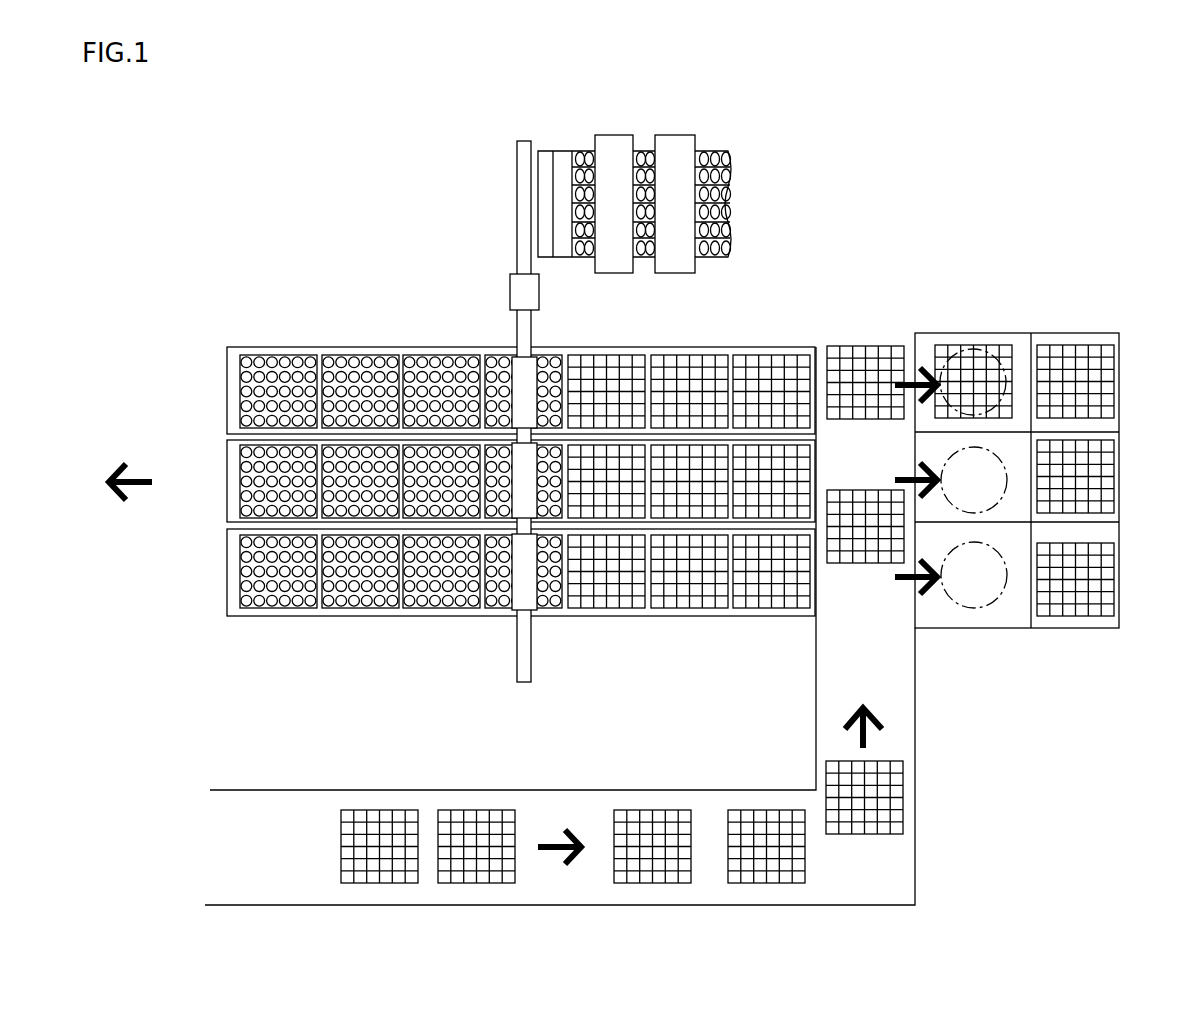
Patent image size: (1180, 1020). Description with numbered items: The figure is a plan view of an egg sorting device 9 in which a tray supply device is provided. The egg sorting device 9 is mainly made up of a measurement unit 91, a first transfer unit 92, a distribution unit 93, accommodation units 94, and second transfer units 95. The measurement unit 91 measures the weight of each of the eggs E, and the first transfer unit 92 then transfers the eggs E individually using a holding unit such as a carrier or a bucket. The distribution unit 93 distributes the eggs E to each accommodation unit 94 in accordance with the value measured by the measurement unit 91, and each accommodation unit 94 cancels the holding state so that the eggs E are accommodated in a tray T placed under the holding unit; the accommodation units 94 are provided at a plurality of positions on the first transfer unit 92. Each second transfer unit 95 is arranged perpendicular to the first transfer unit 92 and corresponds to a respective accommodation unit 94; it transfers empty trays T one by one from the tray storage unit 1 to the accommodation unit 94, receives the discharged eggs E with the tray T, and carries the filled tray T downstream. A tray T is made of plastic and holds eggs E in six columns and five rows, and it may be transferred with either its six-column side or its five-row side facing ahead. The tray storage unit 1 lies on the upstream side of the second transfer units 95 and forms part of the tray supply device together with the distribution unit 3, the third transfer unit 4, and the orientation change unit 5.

The tray storage unit 1 is at (1122, 420).
The distribution unit 3 is at (840, 596).
The third transfer unit 4 is at (890, 663).
The orientation change unit 5 is at (966, 336).
The egg sorting device 9 is at (410, 163).
The measurement unit 91 is at (545, 150).
The first transfer unit 92 is at (514, 200).
The distribution unit 93 is at (504, 322).
The accommodation unit 94 is at (540, 375).
The second transfer unit 95 is at (707, 346).
The tray T is at (441, 362).
The egg E is at (358, 365).